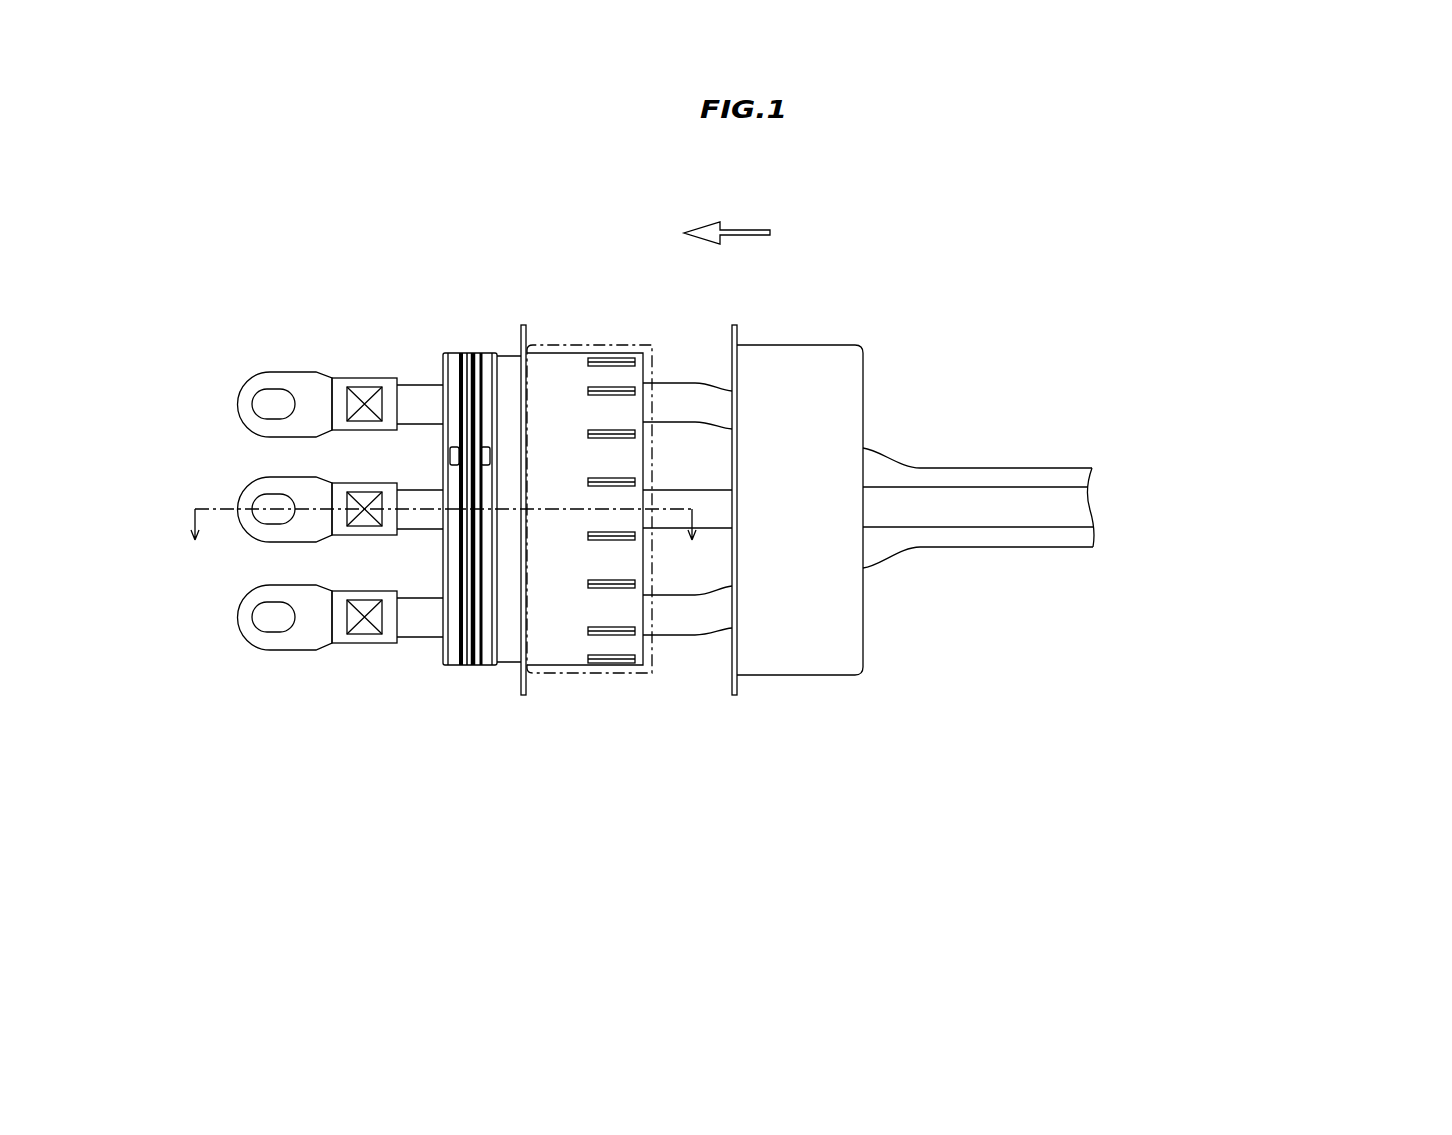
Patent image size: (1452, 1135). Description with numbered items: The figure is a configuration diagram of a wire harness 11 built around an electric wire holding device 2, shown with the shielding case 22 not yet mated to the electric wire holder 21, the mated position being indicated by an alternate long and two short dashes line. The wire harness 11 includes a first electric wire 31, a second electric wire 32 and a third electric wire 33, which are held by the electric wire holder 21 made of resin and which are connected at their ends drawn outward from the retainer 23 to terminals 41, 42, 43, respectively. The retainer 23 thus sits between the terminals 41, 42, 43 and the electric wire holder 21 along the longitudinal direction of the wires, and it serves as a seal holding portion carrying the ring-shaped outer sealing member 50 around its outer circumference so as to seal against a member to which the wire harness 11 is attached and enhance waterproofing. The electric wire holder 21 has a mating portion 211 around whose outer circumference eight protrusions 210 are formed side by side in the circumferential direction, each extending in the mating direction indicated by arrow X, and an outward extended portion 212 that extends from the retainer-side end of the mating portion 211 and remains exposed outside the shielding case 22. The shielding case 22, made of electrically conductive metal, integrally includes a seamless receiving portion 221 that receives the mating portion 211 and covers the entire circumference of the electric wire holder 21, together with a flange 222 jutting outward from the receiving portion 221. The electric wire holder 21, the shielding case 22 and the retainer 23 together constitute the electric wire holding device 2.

The wire harness 11 is at (300, 199).
The electric wire holding device 2 is at (773, 805).
The electric wire holder 21 is at (572, 681).
The mating portion 211 is at (562, 362).
The outward extended portion 212 is at (508, 362).
The protrusions 210 is at (602, 640).
The retainer 23 is at (455, 355).
The outer sealing member 50 is at (473, 667).
The shielding case 22 is at (992, 253).
The receiving portion 221 is at (810, 355).
The flange 222 is at (738, 330).
The terminal 41 is at (248, 392).
The terminal 42 is at (248, 500).
The terminal 43 is at (250, 630).
The first electric wire 31 is at (1080, 478).
The second electric wire 32 is at (1082, 508).
The third electric wire 33 is at (1082, 537).